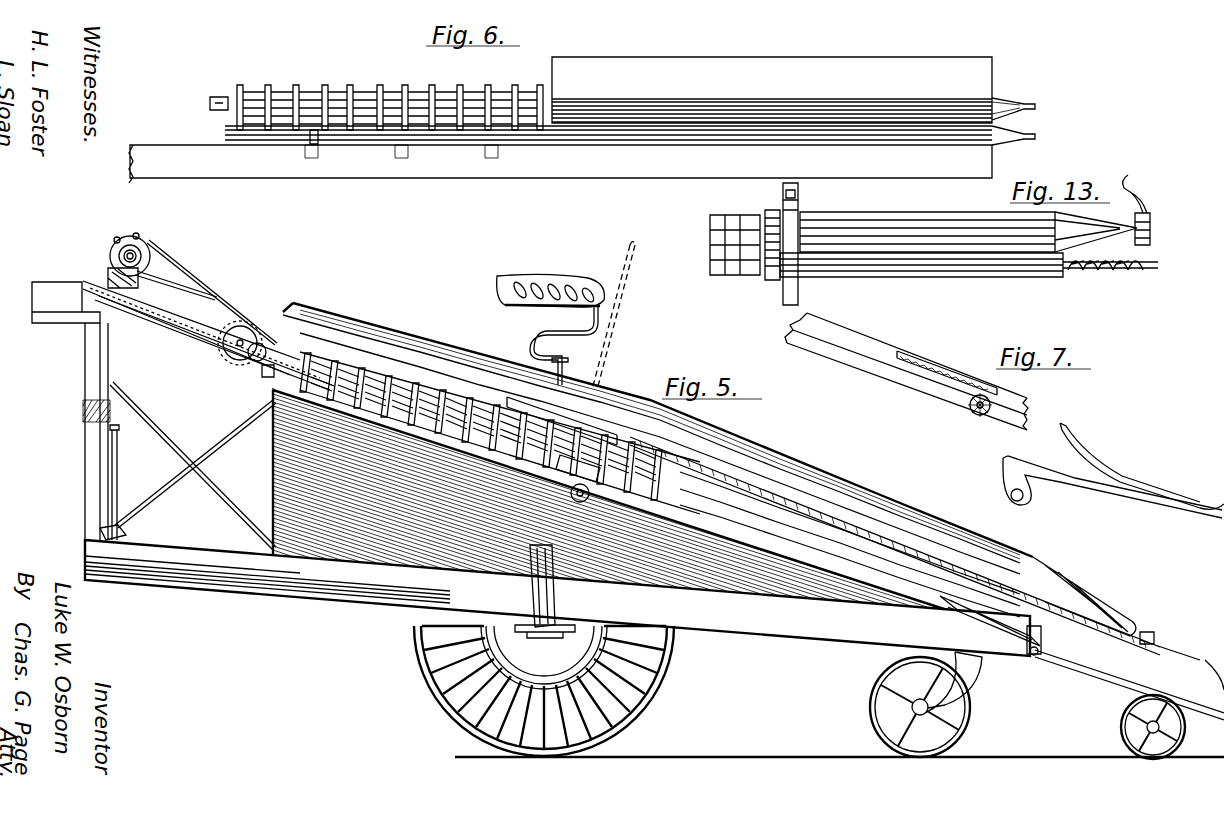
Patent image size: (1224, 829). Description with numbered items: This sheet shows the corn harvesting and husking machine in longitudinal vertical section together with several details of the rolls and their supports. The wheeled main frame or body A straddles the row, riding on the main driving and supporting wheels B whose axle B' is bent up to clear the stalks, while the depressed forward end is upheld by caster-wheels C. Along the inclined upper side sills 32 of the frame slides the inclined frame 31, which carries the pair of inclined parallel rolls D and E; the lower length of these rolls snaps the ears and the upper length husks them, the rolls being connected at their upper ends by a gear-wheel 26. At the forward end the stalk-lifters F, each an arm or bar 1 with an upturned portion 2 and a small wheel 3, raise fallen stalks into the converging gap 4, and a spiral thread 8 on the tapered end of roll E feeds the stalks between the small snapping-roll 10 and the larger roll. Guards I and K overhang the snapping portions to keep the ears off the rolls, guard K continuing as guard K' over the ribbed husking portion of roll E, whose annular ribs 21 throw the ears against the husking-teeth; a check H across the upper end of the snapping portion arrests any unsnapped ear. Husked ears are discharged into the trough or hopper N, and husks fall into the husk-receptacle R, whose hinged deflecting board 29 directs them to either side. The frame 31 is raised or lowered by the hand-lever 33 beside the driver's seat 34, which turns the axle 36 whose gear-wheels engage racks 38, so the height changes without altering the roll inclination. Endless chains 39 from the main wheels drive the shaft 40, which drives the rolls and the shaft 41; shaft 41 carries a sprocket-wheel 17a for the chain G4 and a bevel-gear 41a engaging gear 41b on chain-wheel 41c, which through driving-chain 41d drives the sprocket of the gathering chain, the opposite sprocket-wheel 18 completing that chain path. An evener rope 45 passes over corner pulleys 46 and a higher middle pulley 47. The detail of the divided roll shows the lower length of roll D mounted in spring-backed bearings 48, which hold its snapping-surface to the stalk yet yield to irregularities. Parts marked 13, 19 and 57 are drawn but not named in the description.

In FIG. 5, the arm or bar 1 is at (1052, 660).
In FIG. 6, the upturned portion 2 is at (888, 190).
In FIG. 7, the upturned portion 2 is at (1142, 466).
In FIG. 5, the upturned portion 2 is at (1214, 679).
In FIG. 6, the small wheels 3 is at (629, 205).
In FIG. 5, the small wheels 3 is at (1120, 728).
In FIG. 6, the converging gap 4 is at (327, 215).
In FIG. 13, the spiral thread 8 is at (1110, 275).
In FIG. 5, the spiral thread 8 is at (400, 655).
In FIG. 13, the small snapping-roll 10 is at (1050, 276).
In FIG. 13, the conveyor tube 13 is at (880, 214).
In FIG. 5, the conveyor tube 13 is at (905, 602).
In FIG. 5, the sprocket-wheel 17a is at (146, 249).
In FIG. 5, the sprocket-wheel 18 is at (1160, 642).
In FIG. 6, the rollers 19 is at (420, 88).
In FIG. 6, the annular ribs or flanges 21 is at (315, 142).
In FIG. 5, the gear-wheel 26 is at (255, 368).
In FIG. 5, the husk-deflecting board 29 is at (430, 401).
In FIG. 7, the inclined frame 31 is at (1015, 400).
In FIG. 5, the inclined frame 31 is at (205, 341).
In FIG. 7, the upper inclined side sills 32 is at (1003, 416).
In FIG. 5, the upper inclined side sills 32 is at (165, 339).
In FIG. 5, the hand-lever 33 is at (612, 372).
In FIG. 5, the driver's seat 34 is at (551, 318).
In FIG. 7, the axle 36 is at (976, 416).
In FIG. 5, the axle 36 is at (586, 486).
In FIG. 7, the racks 38 is at (942, 372).
In FIG. 5, the endless chains 39 is at (268, 382).
In FIG. 5, the shaft 40 is at (232, 356).
In FIG. 5, the shaft 41 is at (152, 257).
In FIG. 5, the bevel-gear 41a is at (130, 246).
In FIG. 5, the gear 41b is at (118, 265).
In FIG. 5, the chain-wheel 41c is at (108, 273).
In FIG. 5, the driving-chain 41d is at (110, 262).
In FIG. 5, the rope 45 is at (220, 545).
In FIG. 5, the pulleys 46 is at (165, 538).
In FIG. 5, the middle pulley 47 is at (116, 430).
In FIG. 13, the spring-backed bearings 48 is at (800, 220).
In FIG. 7, the pin 57 is at (972, 408).
In FIG. 5, the main frame or body A is at (556, 489).
In FIG. 5, the main driving and supporting wheels B is at (552, 691).
In FIG. 5, the axle B' is at (525, 591).
In FIG. 5, the caster-wheels C is at (919, 704).
In FIG. 6, the roll D is at (468, 85).
In FIG. 13, the roll D is at (737, 215).
In FIG. 5, the roll D is at (400, 362).
In FIG. 6, the roll E is at (1013, 146).
In FIG. 13, the roll E is at (870, 266).
In FIG. 5, the roll E is at (1129, 685).
In FIG. 7, the stalk-lifters F is at (1112, 487).
In FIG. 5, the chain G4 is at (192, 271).
In FIG. 5, the check H is at (684, 440).
In FIG. 6, the guard I is at (796, 62).
In FIG. 5, the guard I is at (890, 525).
In FIG. 6, the guard K is at (560, 164).
In FIG. 6, the guard K' is at (608, 138).
In FIG. 7, the trough or hopper N is at (1027, 449).
In FIG. 5, the trough or hopper N is at (66, 302).
In FIG. 5, the husk-receptacle R is at (347, 537).